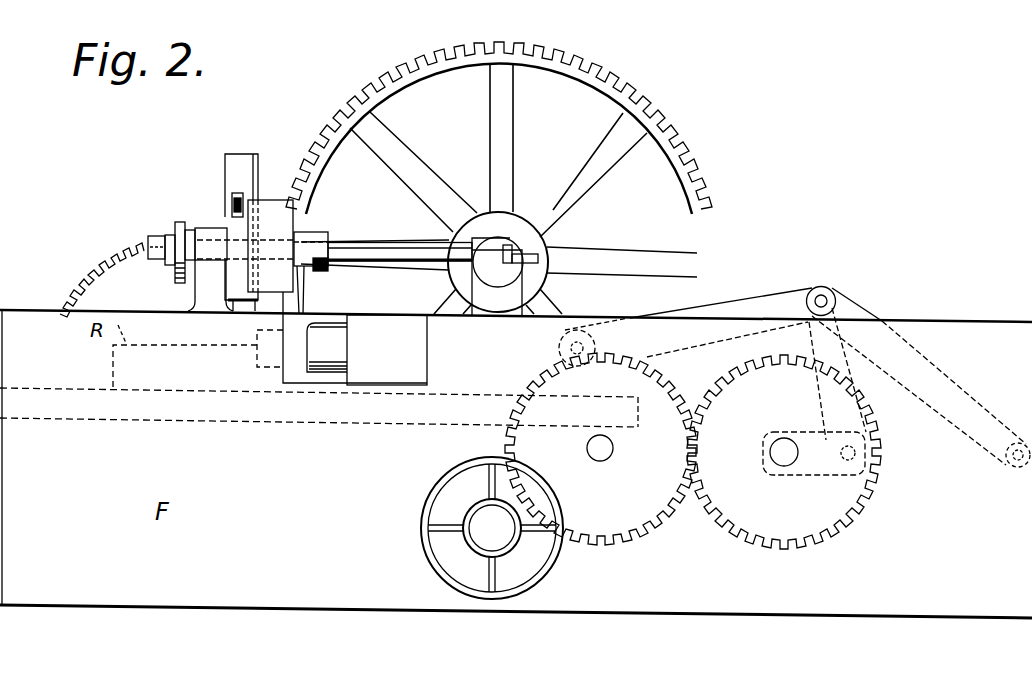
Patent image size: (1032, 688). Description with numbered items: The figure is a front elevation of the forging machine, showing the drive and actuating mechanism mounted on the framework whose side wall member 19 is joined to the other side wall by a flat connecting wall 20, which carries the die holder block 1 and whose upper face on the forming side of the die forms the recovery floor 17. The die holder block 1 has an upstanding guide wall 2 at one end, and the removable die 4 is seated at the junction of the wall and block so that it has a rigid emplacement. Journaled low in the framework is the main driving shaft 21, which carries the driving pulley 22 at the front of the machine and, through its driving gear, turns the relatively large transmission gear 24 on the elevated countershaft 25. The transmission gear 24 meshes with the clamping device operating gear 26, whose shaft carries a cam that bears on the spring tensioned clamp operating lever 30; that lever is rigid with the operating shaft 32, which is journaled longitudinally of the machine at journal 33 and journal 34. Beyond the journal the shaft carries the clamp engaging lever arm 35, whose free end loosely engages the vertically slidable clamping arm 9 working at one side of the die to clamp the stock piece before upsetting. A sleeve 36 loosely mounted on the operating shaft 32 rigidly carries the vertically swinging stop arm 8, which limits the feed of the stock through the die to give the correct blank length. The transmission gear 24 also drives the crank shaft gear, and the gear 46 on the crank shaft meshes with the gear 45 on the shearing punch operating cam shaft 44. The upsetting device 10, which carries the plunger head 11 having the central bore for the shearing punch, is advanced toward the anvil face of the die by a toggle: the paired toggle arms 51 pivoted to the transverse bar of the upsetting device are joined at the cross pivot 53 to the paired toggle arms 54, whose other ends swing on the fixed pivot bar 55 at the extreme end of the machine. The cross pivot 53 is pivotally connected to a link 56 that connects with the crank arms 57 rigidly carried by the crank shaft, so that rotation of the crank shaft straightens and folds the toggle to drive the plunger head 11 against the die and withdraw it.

The die holder block 1 is at (205, 376).
The upstanding guide wall 2 is at (245, 256).
The die 4 is at (258, 358).
The stop arm 8 is at (305, 298).
The clamping arm 9 is at (228, 224).
The upsetting device 10 is at (387, 350).
The plunger head 11 is at (327, 347).
The recovery floor 17 is at (300, 375).
The vertical side wall member 19 is at (977, 334).
The connecting wall 20 is at (284, 426).
The main driving shaft 21 is at (492, 528).
The driving pulley 22 is at (432, 491).
The transmission gear 24 is at (430, 70).
The countershaft 25 is at (512, 268).
The clamping device operating gear 26 is at (102, 280).
The clamp operating lever 30 is at (177, 228).
The operating shaft 32 is at (395, 264).
The journal 33 is at (210, 265).
The journal 34 is at (486, 262).
The clamp engaging lever arm 35 is at (230, 200).
The sleeve 36 is at (321, 236).
The shearing punch operating cam shaft 44 is at (605, 448).
The gear 45 is at (601, 449).
The gear 46 is at (784, 452).
The toggle arms 51 is at (740, 305).
The cross pivot 53 is at (822, 291).
The toggle arms 54 is at (850, 310).
The fixed pivot bar 55 is at (1012, 468).
The link 56 is at (818, 345).
The crank arms 57 is at (808, 435).